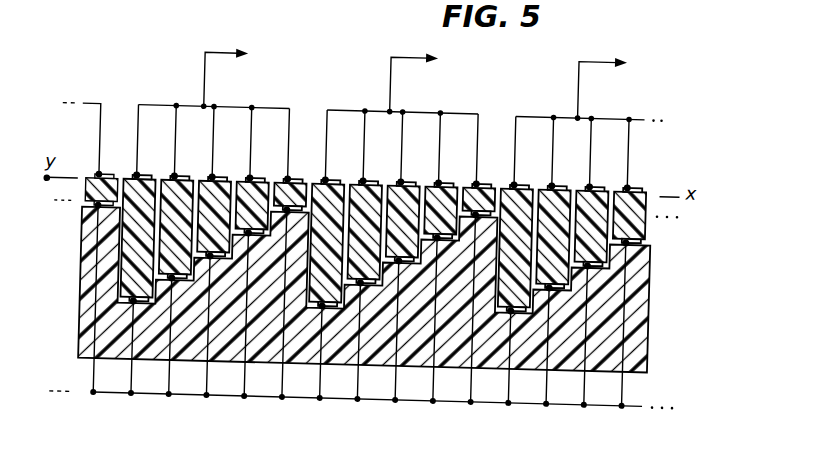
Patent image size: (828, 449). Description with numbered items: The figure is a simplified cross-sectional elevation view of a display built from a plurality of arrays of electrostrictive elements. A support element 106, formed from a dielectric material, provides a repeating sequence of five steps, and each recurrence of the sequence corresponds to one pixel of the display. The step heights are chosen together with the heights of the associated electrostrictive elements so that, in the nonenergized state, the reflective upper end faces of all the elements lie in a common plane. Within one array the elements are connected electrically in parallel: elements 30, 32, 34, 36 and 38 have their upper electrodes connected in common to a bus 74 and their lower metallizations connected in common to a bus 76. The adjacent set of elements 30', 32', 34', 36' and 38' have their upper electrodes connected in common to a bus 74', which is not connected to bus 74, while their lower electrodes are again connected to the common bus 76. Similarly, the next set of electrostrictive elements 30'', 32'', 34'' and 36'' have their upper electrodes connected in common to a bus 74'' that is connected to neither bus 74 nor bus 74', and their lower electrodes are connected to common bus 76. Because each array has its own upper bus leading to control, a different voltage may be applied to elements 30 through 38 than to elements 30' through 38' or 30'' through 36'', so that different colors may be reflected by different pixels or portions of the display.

The electrostrictive element 30 is at (141, 221).
The electrostrictive element 32 is at (179, 210).
The electrostrictive element 34 is at (217, 200).
The electrostrictive element 36 is at (255, 189).
The electrostrictive element 38 is at (294, 173).
The electrostrictive element 30' is at (332, 223).
The electrostrictive element 32' is at (370, 212).
The electrostrictive element 34' is at (409, 201).
The electrostrictive element 36' is at (447, 190).
The electrostrictive element 38' is at (484, 179).
The electrostrictive element 30'' is at (523, 227).
The electrostrictive element 32'' is at (561, 218).
The electrostrictive element 34'' is at (598, 208).
The electrostrictive element 36'' is at (640, 197).
The bus 74 is at (241, 112).
The bus 74' is at (430, 117).
The bus 74'' is at (619, 121).
The common bus 76 is at (340, 402).
The support element 106 is at (649, 261).